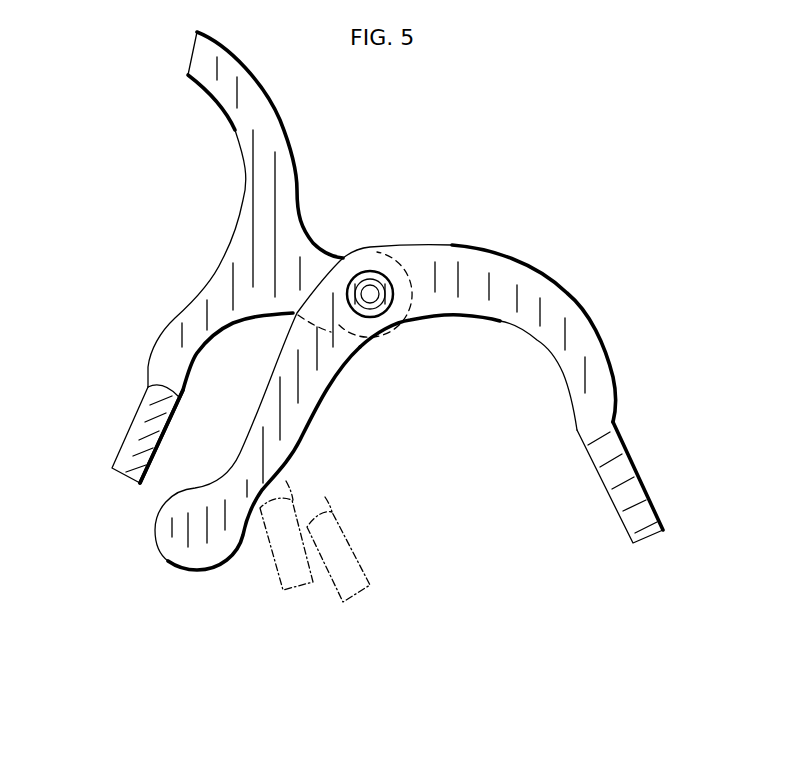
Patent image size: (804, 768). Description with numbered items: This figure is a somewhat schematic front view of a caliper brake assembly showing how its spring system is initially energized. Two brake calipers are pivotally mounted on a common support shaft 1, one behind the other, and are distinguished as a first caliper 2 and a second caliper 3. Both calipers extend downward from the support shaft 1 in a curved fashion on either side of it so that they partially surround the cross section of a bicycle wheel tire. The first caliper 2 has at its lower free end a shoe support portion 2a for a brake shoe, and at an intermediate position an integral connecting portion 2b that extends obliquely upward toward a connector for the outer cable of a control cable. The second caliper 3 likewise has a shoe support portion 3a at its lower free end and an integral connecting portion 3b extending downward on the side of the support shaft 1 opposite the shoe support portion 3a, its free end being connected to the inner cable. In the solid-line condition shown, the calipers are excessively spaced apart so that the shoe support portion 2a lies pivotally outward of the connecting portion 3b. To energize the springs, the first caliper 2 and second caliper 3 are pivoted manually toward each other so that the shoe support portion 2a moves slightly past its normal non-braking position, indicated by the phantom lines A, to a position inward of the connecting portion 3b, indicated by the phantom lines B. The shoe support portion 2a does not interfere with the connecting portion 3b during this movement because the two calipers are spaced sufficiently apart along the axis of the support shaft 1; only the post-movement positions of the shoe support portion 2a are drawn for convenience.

The support shaft 1 is at (374, 289).
The first caliper 2 is at (237, 257).
The shoe support portion 2a is at (140, 423).
The connecting portion 2b is at (280, 123).
The second caliper 3 is at (426, 388).
The shoe support portion 3a is at (627, 465).
The connecting portion 3b is at (293, 425).
The phantom lines A is at (273, 557).
The phantom lines B is at (353, 550).